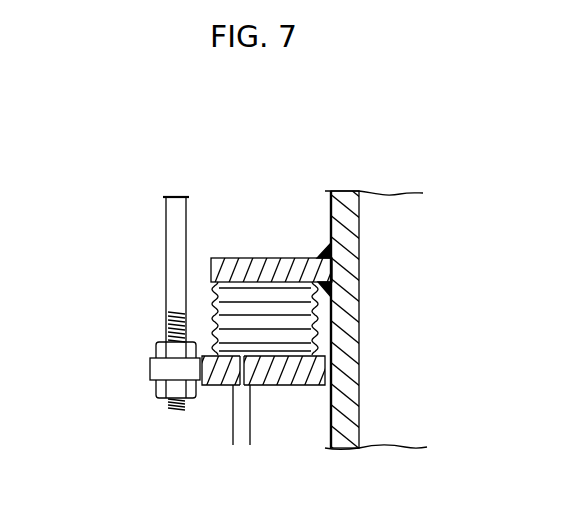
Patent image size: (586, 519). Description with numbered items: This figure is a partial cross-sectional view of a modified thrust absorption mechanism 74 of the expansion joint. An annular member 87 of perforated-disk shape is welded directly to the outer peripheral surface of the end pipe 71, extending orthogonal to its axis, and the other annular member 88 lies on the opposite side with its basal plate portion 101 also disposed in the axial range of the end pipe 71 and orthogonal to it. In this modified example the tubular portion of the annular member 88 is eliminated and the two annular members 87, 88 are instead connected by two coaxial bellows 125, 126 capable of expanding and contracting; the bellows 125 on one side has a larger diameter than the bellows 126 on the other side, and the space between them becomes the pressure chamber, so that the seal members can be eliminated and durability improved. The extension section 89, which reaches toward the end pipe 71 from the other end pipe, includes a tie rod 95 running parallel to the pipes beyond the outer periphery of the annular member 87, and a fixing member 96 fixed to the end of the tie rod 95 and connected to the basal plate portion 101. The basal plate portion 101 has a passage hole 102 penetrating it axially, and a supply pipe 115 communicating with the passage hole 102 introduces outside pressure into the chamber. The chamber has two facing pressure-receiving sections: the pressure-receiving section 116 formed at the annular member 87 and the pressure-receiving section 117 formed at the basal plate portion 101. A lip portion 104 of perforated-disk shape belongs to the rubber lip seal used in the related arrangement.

The end pipe 71 is at (325, 206).
The thrust absorption mechanism 74 is at (204, 414).
The annular member 87 is at (250, 250).
The annular member 88 is at (230, 427).
The extension section 89 is at (158, 210).
The tie rod 95 is at (175, 233).
The fixing member 96 is at (152, 368).
The basal plate portion 101 is at (295, 378).
The passage hole 102 is at (240, 384).
The lip portion 104 is at (233, 340).
The supply pipe 115 is at (231, 424).
The pressure-receiving section 116 is at (293, 283).
The pressure-receiving section 117 is at (292, 352).
The bellows 125 is at (215, 297).
The bellows 126 is at (318, 315).